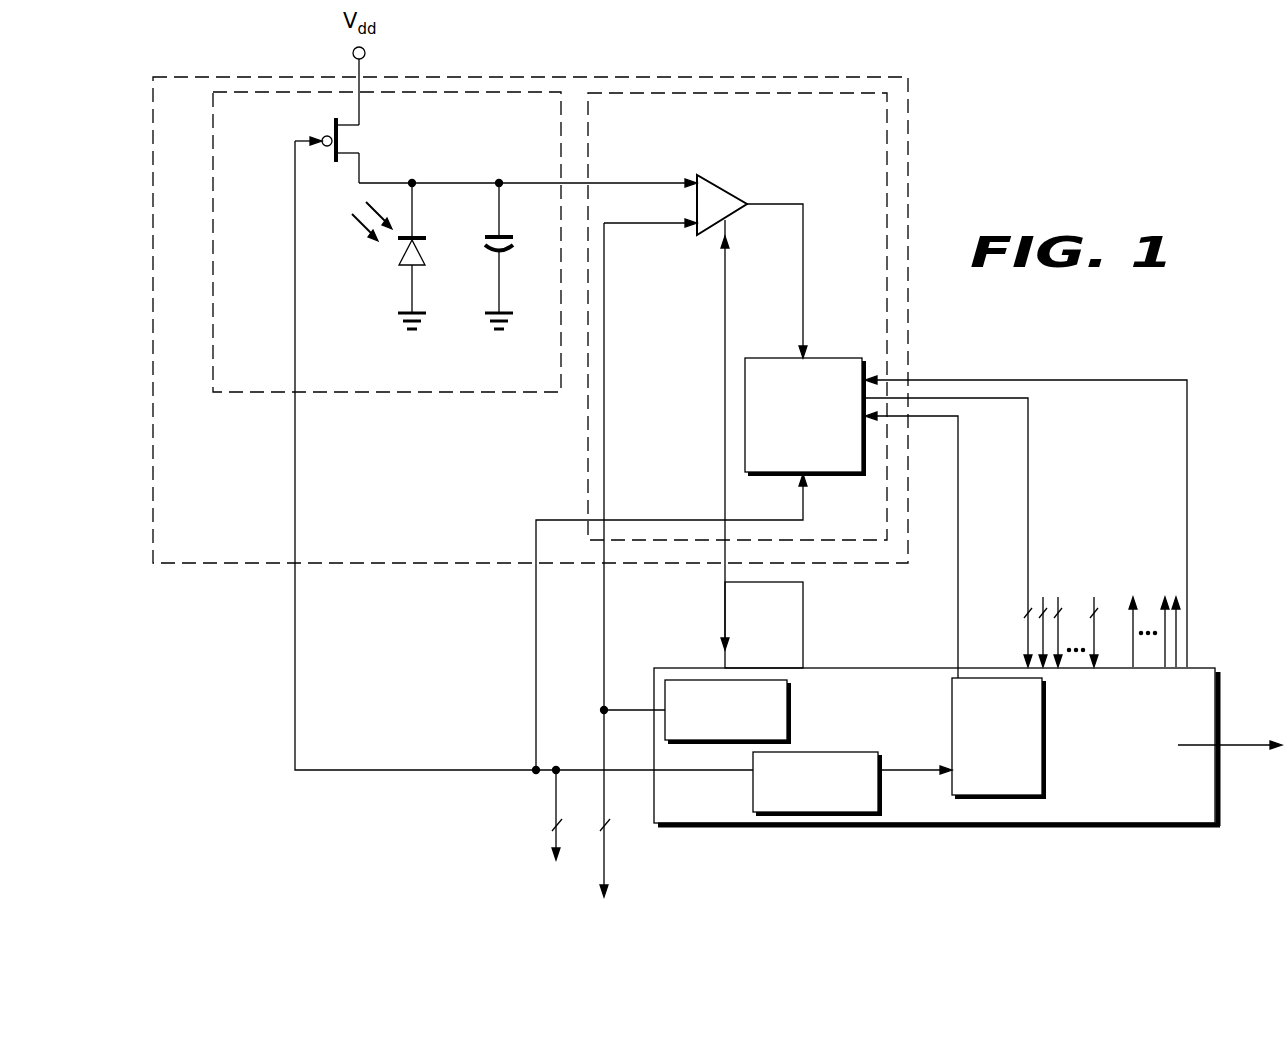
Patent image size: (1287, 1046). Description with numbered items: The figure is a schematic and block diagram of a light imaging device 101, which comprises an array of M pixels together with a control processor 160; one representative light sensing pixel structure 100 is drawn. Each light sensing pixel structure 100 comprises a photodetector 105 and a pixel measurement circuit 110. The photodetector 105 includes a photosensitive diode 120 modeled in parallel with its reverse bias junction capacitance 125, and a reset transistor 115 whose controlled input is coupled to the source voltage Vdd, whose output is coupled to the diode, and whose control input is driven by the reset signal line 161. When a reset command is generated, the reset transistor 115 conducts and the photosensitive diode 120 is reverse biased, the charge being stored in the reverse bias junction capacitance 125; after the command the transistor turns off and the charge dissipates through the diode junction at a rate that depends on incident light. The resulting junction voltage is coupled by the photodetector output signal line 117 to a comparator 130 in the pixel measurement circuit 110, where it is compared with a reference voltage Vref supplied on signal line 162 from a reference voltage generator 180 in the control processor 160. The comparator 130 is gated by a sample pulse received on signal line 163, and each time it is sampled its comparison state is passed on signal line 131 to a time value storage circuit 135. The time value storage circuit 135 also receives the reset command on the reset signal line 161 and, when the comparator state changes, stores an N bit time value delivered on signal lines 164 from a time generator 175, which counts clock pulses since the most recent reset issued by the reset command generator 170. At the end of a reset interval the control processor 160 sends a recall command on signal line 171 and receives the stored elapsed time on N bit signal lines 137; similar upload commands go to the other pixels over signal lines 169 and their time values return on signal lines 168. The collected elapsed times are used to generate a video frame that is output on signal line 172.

The light sensing pixel structure 100 is at (407, 563).
The light imaging device 101 is at (430, 832).
The photodetector 105 is at (433, 93).
The pixel measurement circuit 110 is at (705, 93).
The reset transistor 115 is at (352, 141).
The photodetector output signal line 117 is at (380, 182).
The photosensitive diode 120 is at (418, 237).
The reverse bias junction capacitance 125 is at (505, 237).
The comparator 130 is at (724, 189).
The signal line 131 is at (805, 278).
The time value storage circuit 135 is at (820, 358).
The N bit signal lines 137 is at (1030, 462).
The control processor 160 is at (1213, 668).
The reset signal line 161 is at (382, 768).
The signal line 162 is at (604, 607).
The signal line 163 is at (805, 615).
The signal lines 164 is at (960, 510).
The signal lines 168 is at (1069, 566).
The signal lines 169 is at (1150, 566).
The reset command generator 170 is at (880, 800).
The signal line 171 is at (1189, 415).
The signal line 172 is at (1256, 745).
The time generator 175 is at (1044, 796).
The reference voltage generator 180 is at (789, 712).